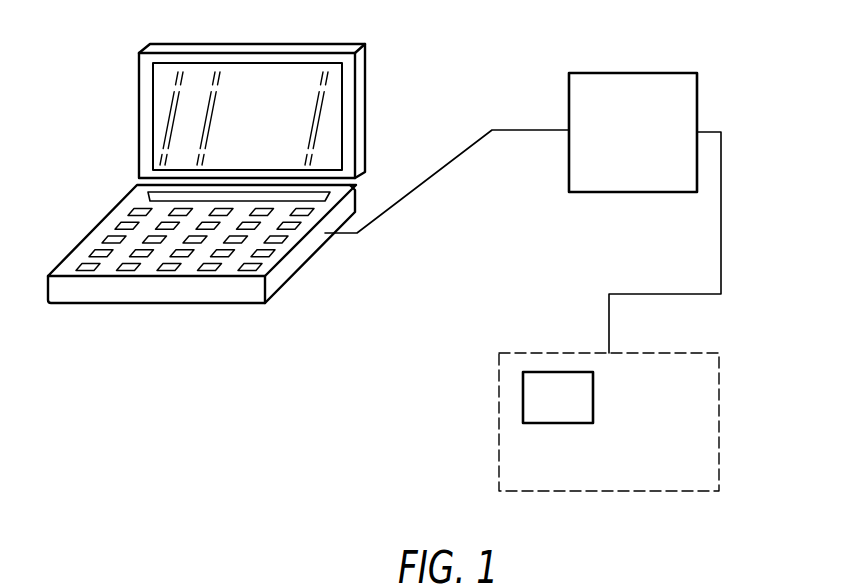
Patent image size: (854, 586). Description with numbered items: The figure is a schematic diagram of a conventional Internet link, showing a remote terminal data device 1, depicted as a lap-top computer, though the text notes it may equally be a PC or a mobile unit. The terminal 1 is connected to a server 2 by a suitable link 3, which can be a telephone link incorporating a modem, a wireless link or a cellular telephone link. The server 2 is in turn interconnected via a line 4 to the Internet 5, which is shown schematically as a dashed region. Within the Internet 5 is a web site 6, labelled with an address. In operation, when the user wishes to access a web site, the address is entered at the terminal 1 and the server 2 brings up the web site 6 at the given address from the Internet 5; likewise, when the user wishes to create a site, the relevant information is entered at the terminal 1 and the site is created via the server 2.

The remote terminal data device 1 is at (142, 294).
The server 2 is at (658, 88).
The link 3 is at (457, 157).
The line 4 is at (721, 252).
The Internet 5 is at (685, 407).
The web site 6 is at (533, 398).